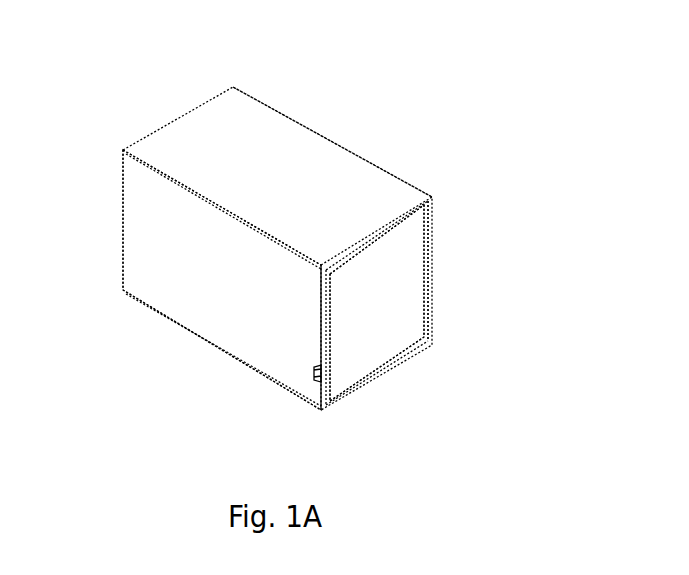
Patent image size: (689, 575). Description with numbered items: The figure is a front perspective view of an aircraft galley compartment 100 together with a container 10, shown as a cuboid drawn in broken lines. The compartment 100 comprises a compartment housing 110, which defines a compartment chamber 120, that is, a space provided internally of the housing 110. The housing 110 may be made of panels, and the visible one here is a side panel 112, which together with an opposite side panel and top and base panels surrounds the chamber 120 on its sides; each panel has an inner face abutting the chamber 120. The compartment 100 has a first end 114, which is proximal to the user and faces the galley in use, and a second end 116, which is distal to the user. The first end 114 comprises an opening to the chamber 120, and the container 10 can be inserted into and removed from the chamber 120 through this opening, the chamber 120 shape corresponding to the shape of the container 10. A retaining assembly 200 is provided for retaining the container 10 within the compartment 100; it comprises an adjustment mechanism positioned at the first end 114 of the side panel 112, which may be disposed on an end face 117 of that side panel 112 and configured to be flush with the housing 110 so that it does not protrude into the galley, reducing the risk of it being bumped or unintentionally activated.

The container 10 is at (353, 337).
The aircraft galley compartment 100 is at (360, 182).
The compartment housing 110 is at (270, 130).
The side panel 112 is at (190, 292).
The first end 114 is at (457, 198).
The second end 116 is at (166, 100).
The end face 117 is at (325, 300).
The compartment chamber 120 is at (398, 248).
The retaining assembly 200 is at (316, 376).